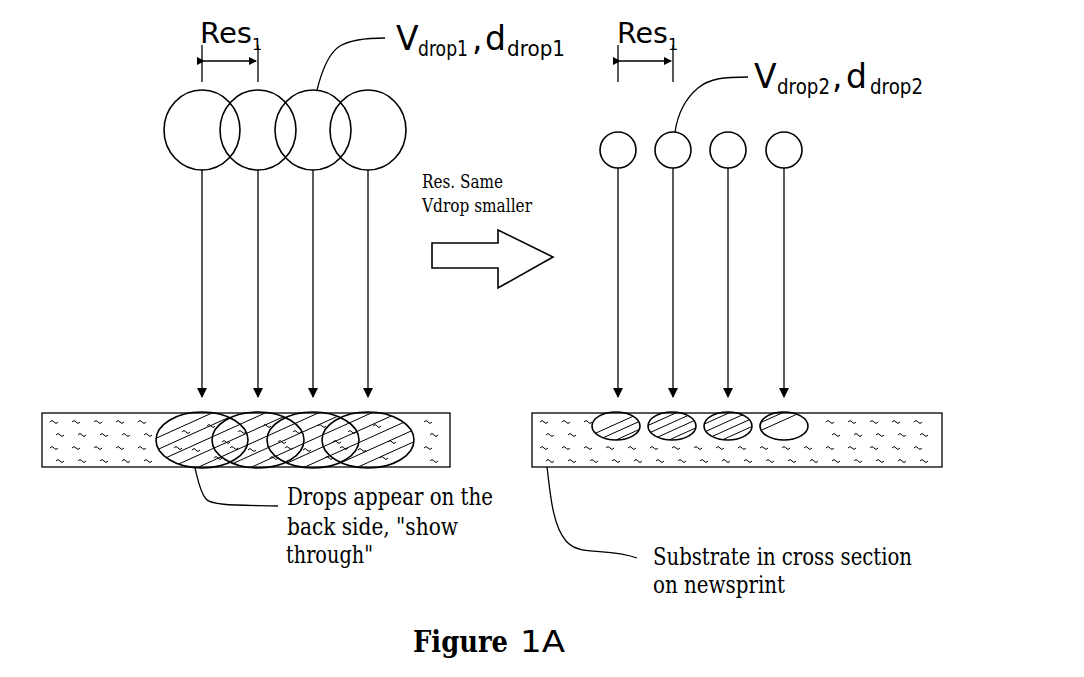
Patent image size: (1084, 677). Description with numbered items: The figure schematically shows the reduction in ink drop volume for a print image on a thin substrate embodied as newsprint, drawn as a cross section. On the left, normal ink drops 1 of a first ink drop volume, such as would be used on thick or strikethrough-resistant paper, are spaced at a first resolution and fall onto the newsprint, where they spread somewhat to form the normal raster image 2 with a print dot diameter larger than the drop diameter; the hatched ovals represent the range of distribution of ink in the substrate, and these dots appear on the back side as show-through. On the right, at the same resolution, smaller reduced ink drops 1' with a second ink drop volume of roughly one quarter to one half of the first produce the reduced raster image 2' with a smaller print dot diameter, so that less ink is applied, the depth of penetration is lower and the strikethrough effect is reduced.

The normal ink drop 1 is at (309, 130).
The reduced ink drop 1' is at (729, 145).
The normal raster image 2 is at (281, 446).
The reduced raster image 2' is at (685, 422).